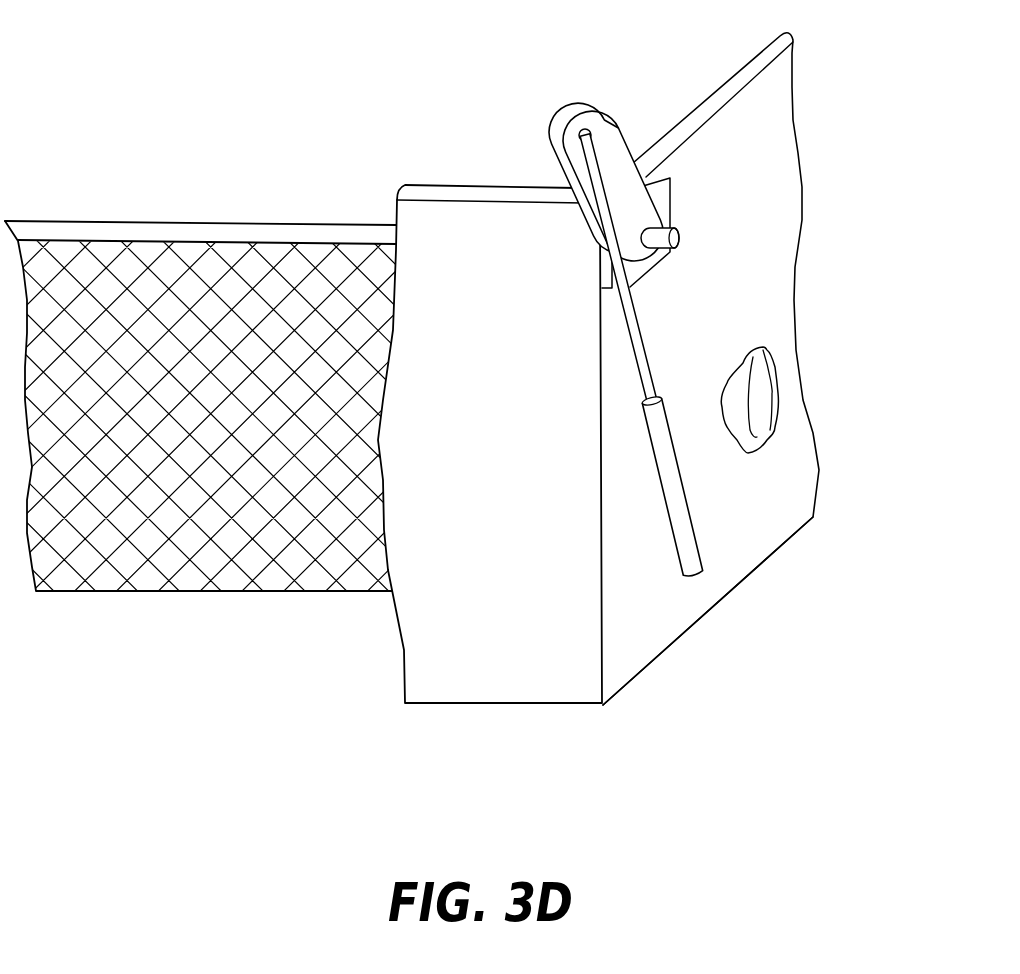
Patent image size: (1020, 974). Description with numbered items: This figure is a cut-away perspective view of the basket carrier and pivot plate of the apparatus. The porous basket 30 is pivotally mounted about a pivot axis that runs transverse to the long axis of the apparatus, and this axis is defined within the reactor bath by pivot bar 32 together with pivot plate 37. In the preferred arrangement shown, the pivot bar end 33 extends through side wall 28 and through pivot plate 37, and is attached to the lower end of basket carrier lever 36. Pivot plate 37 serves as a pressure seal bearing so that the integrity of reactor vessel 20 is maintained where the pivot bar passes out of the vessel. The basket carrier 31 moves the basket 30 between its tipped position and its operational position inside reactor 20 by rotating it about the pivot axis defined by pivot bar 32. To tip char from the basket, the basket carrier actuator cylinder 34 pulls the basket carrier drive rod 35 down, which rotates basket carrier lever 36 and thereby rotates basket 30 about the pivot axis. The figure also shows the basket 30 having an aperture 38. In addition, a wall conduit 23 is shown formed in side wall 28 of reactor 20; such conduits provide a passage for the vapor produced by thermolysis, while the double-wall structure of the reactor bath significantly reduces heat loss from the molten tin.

The reactor vessel 20 is at (480, 564).
The wall conduit 23 is at (767, 418).
The side wall 28 is at (775, 313).
The basket 30 is at (142, 591).
The basket carrier 31 is at (745, 283).
The pivot bar 32 is at (157, 224).
The pivot bar end 33 is at (679, 238).
The basket carrier actuator cylinder 34 is at (668, 484).
The basket carrier drive rod 35 is at (633, 356).
The basket carrier lever 36 is at (600, 123).
The pivot plate 37 is at (667, 193).
The aperture 38 is at (273, 542).